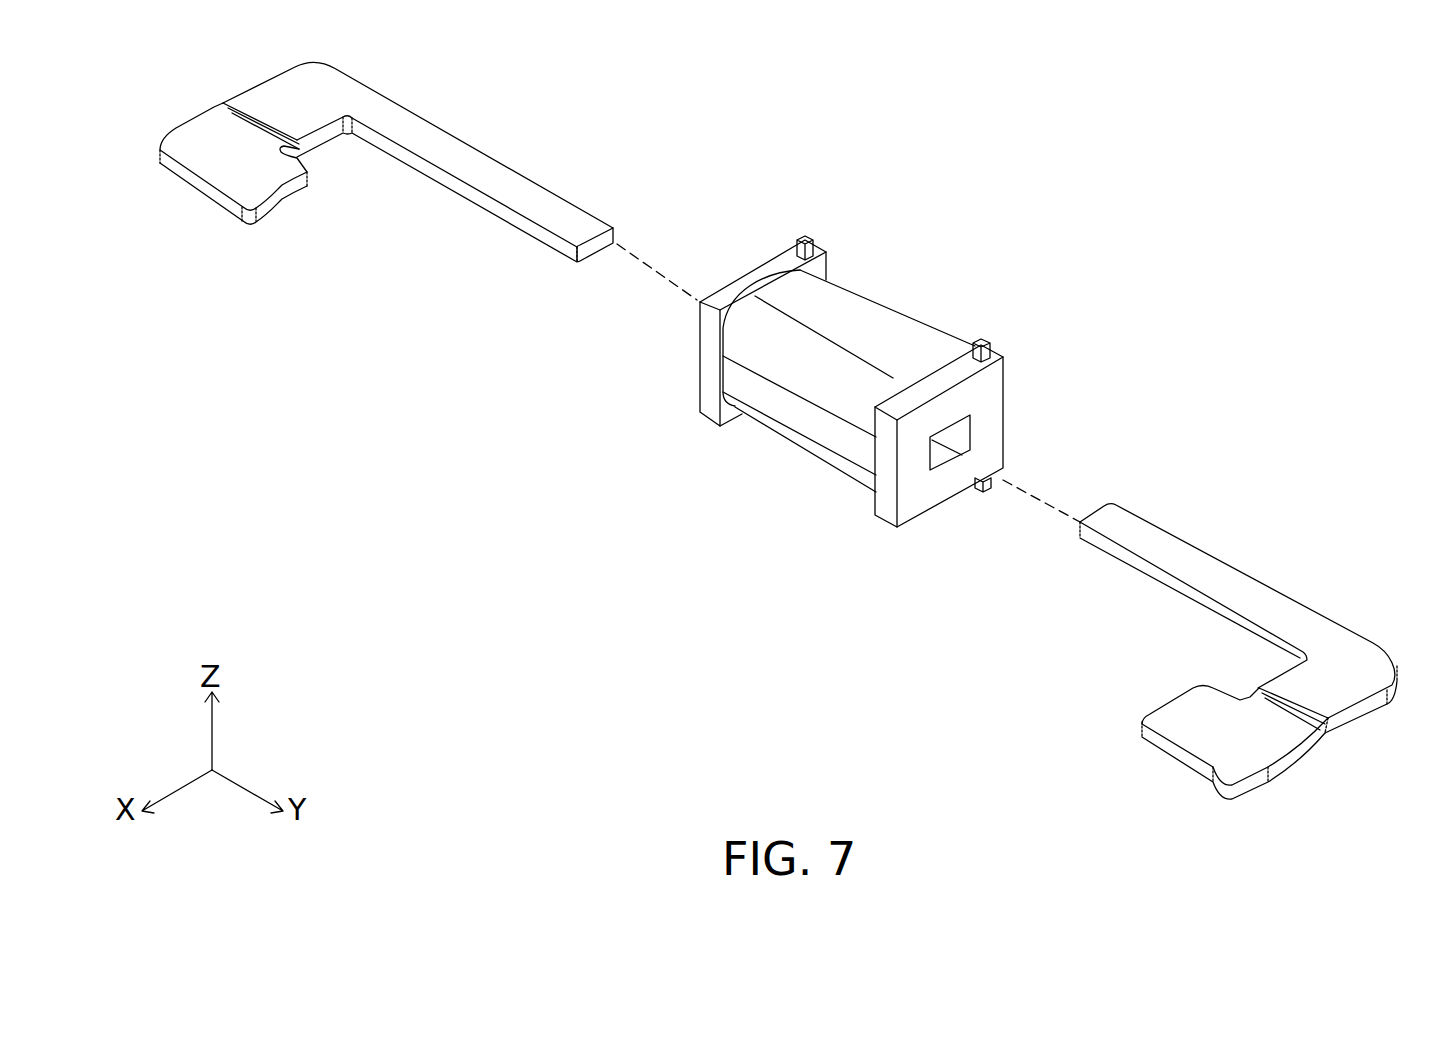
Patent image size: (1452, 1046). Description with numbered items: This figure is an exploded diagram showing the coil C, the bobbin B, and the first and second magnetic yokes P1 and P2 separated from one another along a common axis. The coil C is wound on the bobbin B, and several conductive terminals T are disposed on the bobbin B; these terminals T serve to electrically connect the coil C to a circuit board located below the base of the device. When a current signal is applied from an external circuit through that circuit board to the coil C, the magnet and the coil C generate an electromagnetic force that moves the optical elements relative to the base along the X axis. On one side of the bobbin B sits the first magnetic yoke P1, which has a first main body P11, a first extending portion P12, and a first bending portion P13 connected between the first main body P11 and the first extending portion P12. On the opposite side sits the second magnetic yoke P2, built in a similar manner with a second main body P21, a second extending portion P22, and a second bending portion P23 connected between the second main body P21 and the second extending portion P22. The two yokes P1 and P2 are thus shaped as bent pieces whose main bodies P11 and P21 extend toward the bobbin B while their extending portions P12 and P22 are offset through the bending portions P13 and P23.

The first magnetic yoke P1 is at (365, 141).
The first main body P11 is at (357, 98).
The first extending portion P12 is at (213, 167).
The first bending portion P13 is at (243, 108).
The bobbin B is at (884, 534).
The coil C is at (876, 336).
The conductive terminals T is at (806, 238).
The second magnetic yoke P2 is at (1260, 646).
The second main body P21 is at (1178, 557).
The second extending portion P22 is at (1182, 716).
The second bending portion P23 is at (1320, 727).